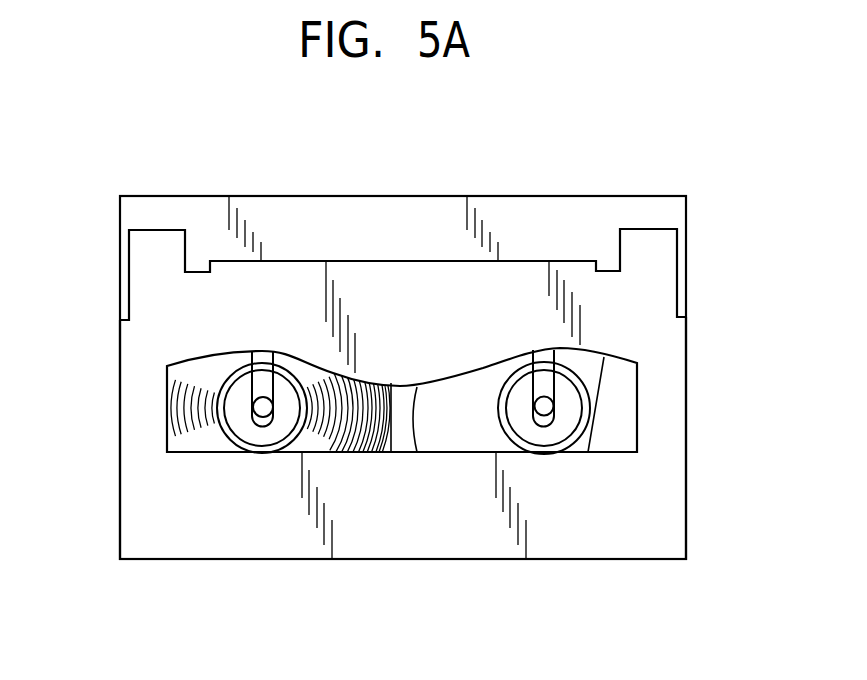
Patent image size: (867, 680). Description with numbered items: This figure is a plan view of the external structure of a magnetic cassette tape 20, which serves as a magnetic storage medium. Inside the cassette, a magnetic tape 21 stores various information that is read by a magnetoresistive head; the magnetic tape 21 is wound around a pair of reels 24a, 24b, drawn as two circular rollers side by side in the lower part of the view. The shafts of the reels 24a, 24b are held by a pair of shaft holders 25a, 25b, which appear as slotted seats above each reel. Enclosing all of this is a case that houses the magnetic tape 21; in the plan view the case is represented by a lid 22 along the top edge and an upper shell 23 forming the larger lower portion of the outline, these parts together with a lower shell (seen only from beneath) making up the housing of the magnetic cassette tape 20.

The magnetic cassette tape 20 is at (162, 160).
The magnetic tape 21 is at (192, 373).
The lid 22 is at (562, 210).
The upper shell 23 is at (653, 518).
The reel 24a is at (250, 438).
The reel 24b is at (568, 420).
The shaft holder 25a is at (262, 363).
The shaft holder 25b is at (543, 357).